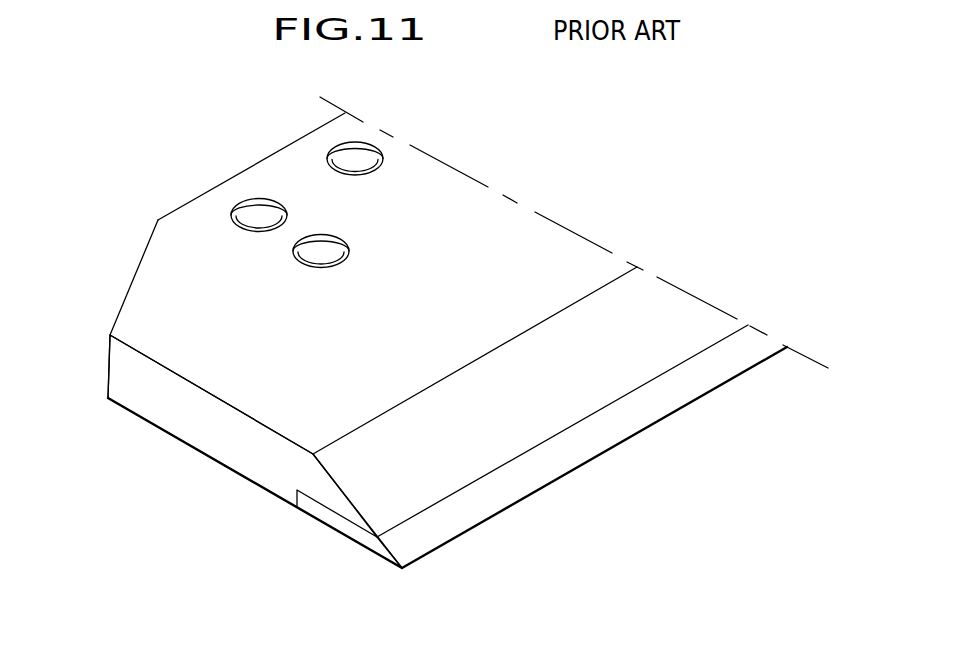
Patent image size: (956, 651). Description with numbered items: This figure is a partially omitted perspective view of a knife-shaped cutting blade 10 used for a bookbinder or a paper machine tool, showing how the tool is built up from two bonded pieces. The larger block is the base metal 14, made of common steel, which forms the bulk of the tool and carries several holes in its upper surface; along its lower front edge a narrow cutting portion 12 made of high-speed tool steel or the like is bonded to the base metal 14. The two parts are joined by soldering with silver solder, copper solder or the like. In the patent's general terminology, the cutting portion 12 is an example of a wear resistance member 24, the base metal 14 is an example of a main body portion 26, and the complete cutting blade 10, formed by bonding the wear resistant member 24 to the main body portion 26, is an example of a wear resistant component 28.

The cutting blade 10 is at (455, 362).
The wear resistant component 28 is at (455, 362).
The base metal 14 is at (255, 461).
The main body portion 26 is at (237, 452).
The cutting portion 12 is at (447, 487).
The wear resistance member 24 is at (337, 523).